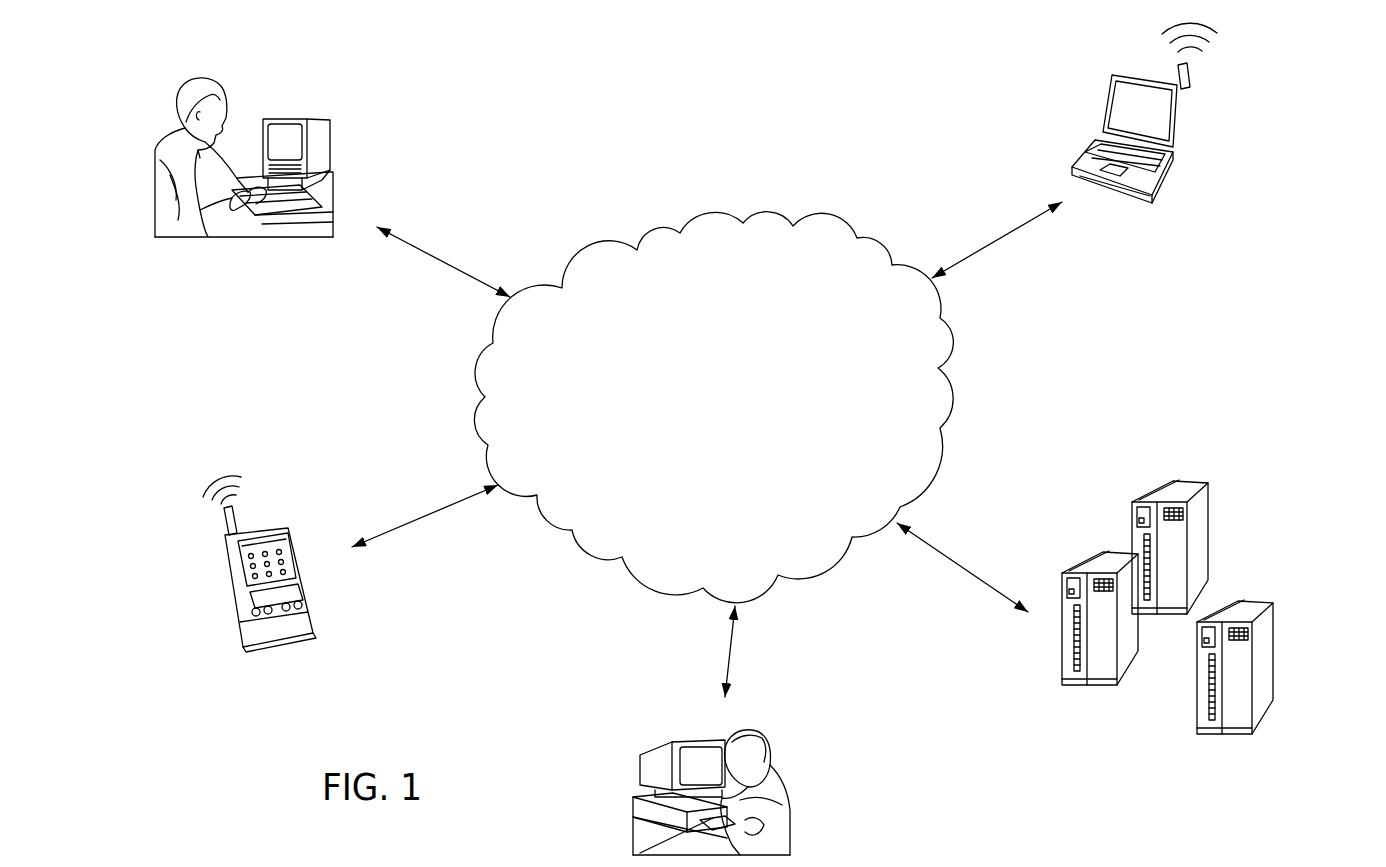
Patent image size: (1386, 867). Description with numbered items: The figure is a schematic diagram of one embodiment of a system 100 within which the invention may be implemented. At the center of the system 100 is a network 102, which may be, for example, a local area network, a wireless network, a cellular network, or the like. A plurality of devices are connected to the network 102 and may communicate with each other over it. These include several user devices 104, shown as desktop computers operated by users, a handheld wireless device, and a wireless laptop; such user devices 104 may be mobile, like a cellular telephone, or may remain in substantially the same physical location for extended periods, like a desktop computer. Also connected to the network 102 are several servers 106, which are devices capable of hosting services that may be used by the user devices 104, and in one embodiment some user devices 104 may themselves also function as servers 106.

The system 100 is at (598, 82).
The network 102 is at (745, 430).
The user devices 104 is at (637, 439).
The servers 106 is at (1222, 633).